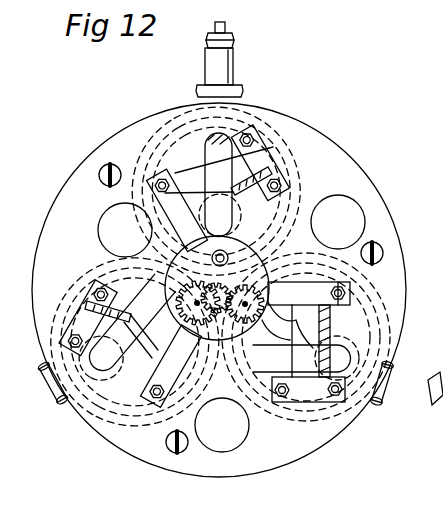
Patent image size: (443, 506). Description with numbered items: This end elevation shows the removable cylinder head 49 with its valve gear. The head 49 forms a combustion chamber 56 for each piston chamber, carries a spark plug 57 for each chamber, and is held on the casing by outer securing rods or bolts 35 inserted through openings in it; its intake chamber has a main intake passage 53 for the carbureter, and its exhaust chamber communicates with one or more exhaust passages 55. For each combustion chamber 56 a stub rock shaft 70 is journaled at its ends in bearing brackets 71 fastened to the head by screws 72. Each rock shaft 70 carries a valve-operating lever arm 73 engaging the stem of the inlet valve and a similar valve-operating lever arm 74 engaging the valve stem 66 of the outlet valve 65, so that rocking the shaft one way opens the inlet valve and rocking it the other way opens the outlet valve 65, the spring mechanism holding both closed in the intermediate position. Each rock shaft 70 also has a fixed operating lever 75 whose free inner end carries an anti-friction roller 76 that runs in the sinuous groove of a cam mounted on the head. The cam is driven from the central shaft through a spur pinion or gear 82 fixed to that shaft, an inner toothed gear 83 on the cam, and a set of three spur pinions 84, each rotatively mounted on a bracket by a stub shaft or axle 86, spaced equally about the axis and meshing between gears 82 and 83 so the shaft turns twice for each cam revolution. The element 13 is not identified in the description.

The door lock assembly 13 is at (58, 172).
The outer securing rods or bolts 35 is at (104, 166).
The cylinder head 49 is at (335, 152).
The main intake passage 53 is at (124, 220).
The exhaust passages 55 is at (352, 212).
The combustion chambers 56 is at (233, 40).
The spark plug 57 is at (236, 70).
The outlet valve 65 is at (285, 250).
The valve stem 66 is at (432, 372).
The stub rock shaft 70 is at (206, 160).
The bearing brackets 71 is at (250, 150).
The screws 72 is at (163, 172).
The valve-operating lever arm 73 is at (278, 280).
The valve-operating lever arm 74 is at (352, 340).
The operating lever 75 is at (265, 215).
The anti-friction roller 76 is at (338, 302).
The spur pinion or gear 82 is at (217, 281).
The inner toothed gear 83 is at (188, 258).
The spur pinions 84 is at (275, 312).
The stub shaft or axle 86 is at (246, 294).